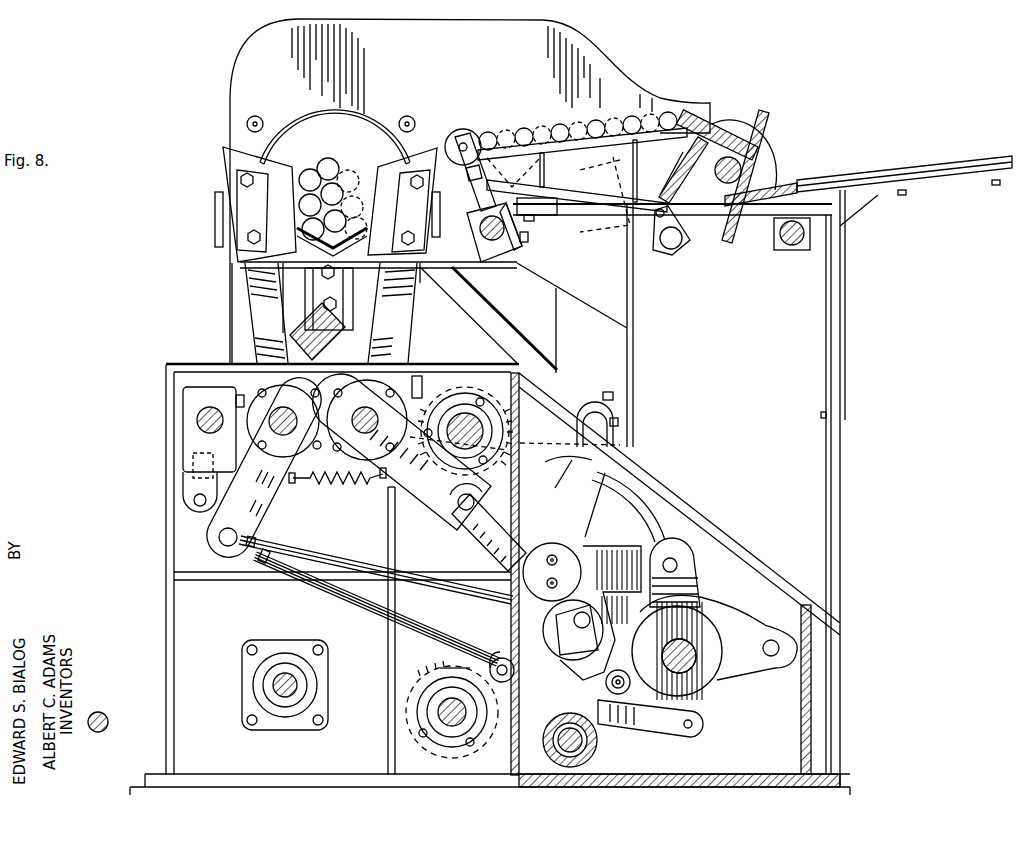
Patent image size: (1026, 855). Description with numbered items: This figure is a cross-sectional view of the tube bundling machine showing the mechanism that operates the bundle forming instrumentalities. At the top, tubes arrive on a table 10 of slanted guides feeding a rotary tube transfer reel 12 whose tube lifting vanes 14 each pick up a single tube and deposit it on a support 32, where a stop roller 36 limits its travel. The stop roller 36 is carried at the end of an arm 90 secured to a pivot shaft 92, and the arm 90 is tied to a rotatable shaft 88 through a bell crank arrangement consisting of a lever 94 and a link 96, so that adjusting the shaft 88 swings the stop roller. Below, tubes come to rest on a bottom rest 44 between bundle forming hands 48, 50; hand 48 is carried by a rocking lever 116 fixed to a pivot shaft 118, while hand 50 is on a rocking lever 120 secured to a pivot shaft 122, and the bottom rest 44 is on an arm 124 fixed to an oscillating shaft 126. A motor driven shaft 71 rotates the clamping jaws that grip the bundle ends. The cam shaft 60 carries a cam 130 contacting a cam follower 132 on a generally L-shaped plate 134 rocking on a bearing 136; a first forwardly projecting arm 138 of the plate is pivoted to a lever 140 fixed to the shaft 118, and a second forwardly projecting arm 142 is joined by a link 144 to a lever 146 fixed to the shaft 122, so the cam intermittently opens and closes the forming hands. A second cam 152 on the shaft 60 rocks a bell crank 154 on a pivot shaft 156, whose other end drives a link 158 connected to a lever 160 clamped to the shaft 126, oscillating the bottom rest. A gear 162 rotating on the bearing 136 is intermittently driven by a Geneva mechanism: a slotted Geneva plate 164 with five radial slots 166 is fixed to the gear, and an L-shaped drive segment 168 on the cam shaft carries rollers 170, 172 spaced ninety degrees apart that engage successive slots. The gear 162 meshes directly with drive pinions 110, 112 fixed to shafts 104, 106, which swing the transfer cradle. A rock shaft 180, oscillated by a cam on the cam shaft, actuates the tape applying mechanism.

The table 10 is at (900, 175).
The rotary tube transfer reel 12 is at (742, 200).
The tube lifting vane 14 is at (724, 232).
The support 32 is at (588, 142).
The stop roller 36 is at (460, 130).
The bottom rest 44 is at (347, 265).
The bundle forming hand 48 is at (396, 170).
The bundle forming hand 50 is at (268, 172).
The cam shaft 60 is at (672, 650).
The motor driven shaft 71 is at (300, 687).
The rotatable shaft 88 is at (668, 250).
The arm 90 is at (472, 206).
The pivot shaft 92 is at (490, 240).
The lever 94 is at (676, 250).
The link 96 is at (562, 158).
The shaft 104 is at (462, 415).
The shaft 106 is at (448, 722).
The drive pinion 110 is at (426, 392).
The drive pinion 112 is at (455, 668).
The rocking lever 116 is at (404, 320).
The pivot shaft 118 is at (367, 420).
The rocking lever 120 is at (256, 303).
The pivot shaft 122 is at (264, 468).
The arm 124 is at (316, 349).
The oscillating shaft 126 is at (197, 421).
The cam 130 is at (706, 642).
The cam follower 132 is at (584, 632).
The L-shaped plate 134 is at (602, 613).
The bearing 136 is at (525, 572).
The first forwardly projecting arm 138 is at (488, 527).
The lever 140 is at (416, 516).
The second forwardly projecting arm 142 is at (500, 656).
The link 144 is at (378, 604).
The lever 146 is at (272, 504).
The second cam 152 is at (650, 698).
The bell crank 154 is at (620, 738).
The pivot shaft 156 is at (558, 748).
The link 158 is at (314, 540).
The lever 160 is at (190, 440).
The gear 162 is at (532, 458).
The slotted Geneva plate 164 is at (645, 522).
The radial slot 166 is at (575, 495).
The drive segment 168 is at (712, 608).
The roller 170 is at (680, 566).
The roller 172 is at (770, 658).
The rock shaft 180 is at (108, 722).